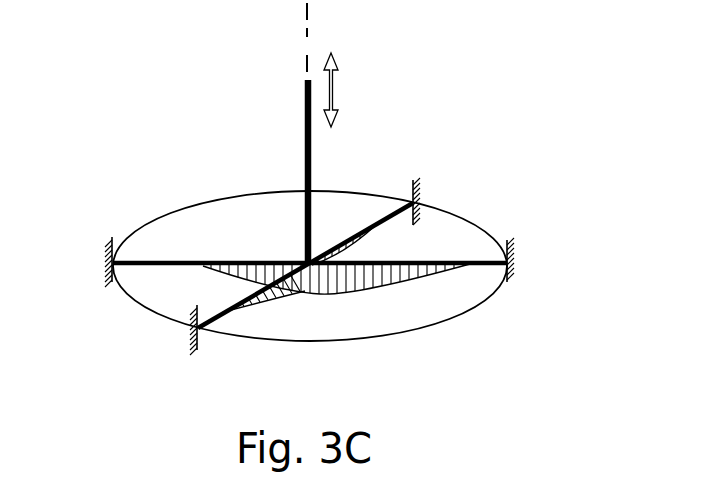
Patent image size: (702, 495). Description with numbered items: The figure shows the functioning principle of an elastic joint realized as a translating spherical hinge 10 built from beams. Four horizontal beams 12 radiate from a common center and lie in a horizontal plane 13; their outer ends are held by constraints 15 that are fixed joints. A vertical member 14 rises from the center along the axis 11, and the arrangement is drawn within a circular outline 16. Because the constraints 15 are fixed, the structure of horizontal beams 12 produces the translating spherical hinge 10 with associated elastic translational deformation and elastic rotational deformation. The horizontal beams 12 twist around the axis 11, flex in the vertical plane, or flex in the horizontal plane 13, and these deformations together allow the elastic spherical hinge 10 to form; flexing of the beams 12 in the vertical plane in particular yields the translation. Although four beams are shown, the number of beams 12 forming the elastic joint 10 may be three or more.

The translating spherical hinge 10 is at (467, 108).
The axis 11 is at (309, 38).
The horizontal beams 12 is at (350, 240).
The horizontal plane 13 is at (362, 315).
The mast 14 is at (305, 160).
The constraints 15 is at (110, 251).
The circular boundary ring 16 is at (447, 321).